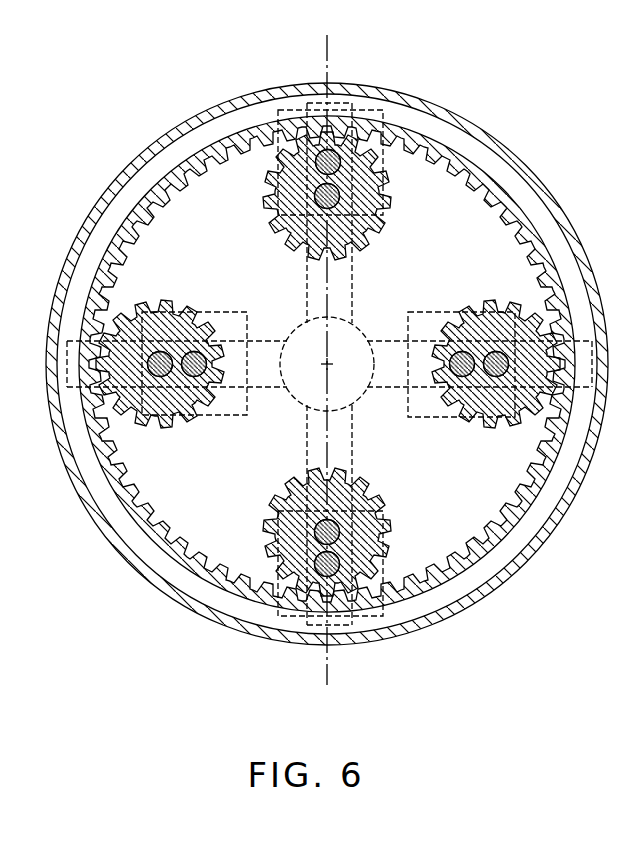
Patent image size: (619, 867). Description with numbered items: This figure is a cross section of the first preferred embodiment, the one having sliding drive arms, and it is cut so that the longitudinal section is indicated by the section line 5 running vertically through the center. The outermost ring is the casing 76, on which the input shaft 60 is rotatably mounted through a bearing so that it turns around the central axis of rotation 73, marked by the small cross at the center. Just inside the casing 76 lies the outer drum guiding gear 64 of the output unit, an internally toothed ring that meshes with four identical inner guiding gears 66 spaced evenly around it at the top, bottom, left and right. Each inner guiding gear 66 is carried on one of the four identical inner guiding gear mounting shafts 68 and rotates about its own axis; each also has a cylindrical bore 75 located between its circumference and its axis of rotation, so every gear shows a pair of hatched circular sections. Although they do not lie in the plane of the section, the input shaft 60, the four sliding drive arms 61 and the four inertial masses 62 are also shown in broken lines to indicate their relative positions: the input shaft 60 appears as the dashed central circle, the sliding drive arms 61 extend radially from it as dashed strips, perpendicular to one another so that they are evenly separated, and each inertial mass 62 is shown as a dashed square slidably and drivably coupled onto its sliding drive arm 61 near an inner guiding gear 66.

The section line 5- 5 is at (336, 358).
The input shaft 60 is at (296, 398).
The sliding drive arms 61 is at (306, 287).
The inertial masses 62 is at (384, 160).
The outer drum guiding gear 64 is at (530, 241).
The inner guiding gears 66 is at (286, 252).
The inner guiding gear mounting shafts 68 is at (340, 204).
The axis of rotation 73 is at (331, 367).
The cylindrical bore 75 is at (318, 157).
The casing 76 is at (441, 104).